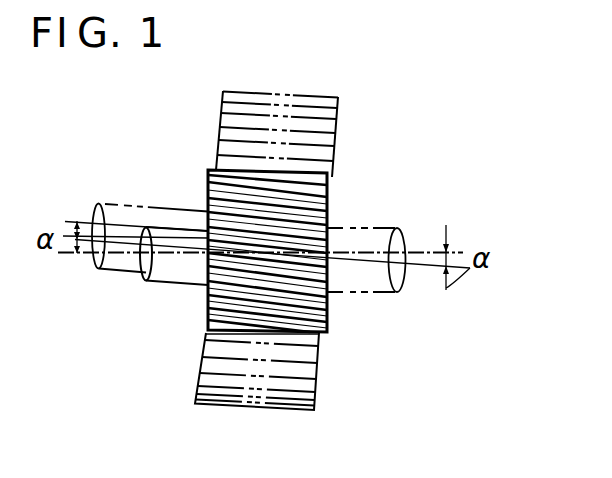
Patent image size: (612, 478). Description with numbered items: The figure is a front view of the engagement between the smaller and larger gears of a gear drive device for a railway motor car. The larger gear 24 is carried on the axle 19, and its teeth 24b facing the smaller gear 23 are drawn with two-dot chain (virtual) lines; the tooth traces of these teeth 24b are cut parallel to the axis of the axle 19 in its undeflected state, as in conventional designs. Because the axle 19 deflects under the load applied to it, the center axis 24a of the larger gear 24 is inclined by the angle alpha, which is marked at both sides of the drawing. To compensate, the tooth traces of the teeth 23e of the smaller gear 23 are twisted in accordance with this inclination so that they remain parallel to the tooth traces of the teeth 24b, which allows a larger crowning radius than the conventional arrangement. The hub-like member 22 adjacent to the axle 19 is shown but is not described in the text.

The axle 19 is at (123, 273).
The hub 22 is at (168, 220).
The smaller gear 23 is at (318, 169).
The teeth of the smaller gear 23e is at (303, 242).
The larger gear 24 is at (323, 378).
The center axis of the larger gear 24a is at (418, 266).
The teeth of the larger gear 24b is at (326, 340).